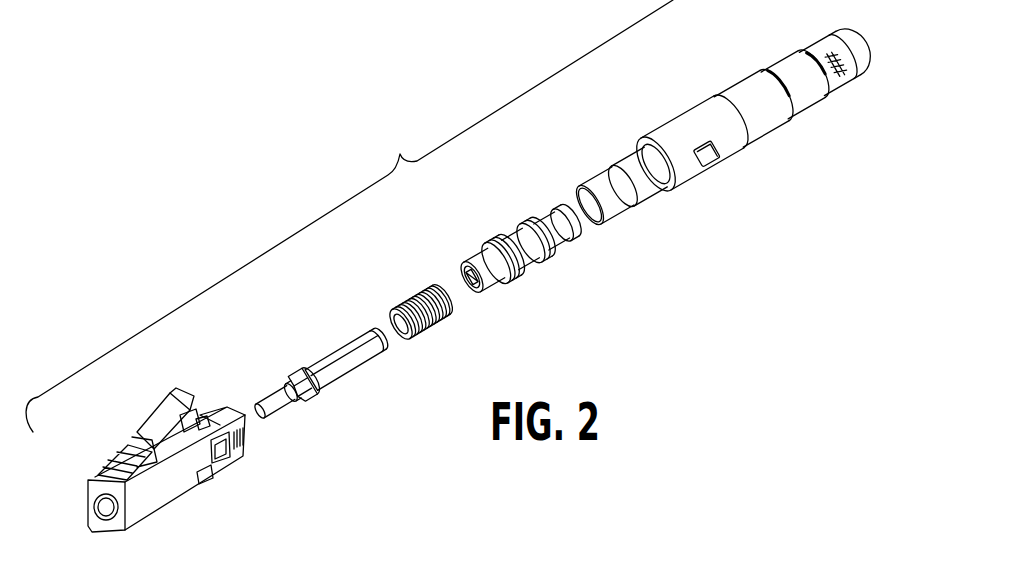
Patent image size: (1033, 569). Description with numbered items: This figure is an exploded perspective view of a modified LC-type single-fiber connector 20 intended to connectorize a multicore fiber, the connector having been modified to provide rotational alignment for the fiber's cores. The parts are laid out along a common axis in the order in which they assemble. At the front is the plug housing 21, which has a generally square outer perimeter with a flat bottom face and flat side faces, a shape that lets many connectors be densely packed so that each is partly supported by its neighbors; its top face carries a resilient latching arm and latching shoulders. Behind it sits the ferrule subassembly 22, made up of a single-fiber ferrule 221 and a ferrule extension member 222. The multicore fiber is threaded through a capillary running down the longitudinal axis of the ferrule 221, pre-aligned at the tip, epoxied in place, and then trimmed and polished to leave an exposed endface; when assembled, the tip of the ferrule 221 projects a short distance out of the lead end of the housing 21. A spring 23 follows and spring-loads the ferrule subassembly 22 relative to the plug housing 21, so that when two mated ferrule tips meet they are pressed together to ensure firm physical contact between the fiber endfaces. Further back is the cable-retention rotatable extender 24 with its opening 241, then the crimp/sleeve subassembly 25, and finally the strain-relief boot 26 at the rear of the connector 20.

The connector 20 is at (349, 216).
The plug housing 21 is at (129, 409).
The ferrule subassembly 22 is at (321, 390).
The single-fiber ferrule 221 is at (276, 405).
The ferrule extension member 222 is at (347, 356).
The spring 23 is at (413, 271).
The cable-retention rotatable extender 24 is at (521, 268).
The opening 241 is at (469, 292).
The crimp/sleeve subassembly 25 is at (593, 151).
The strain-relief boot 26 is at (713, 74).